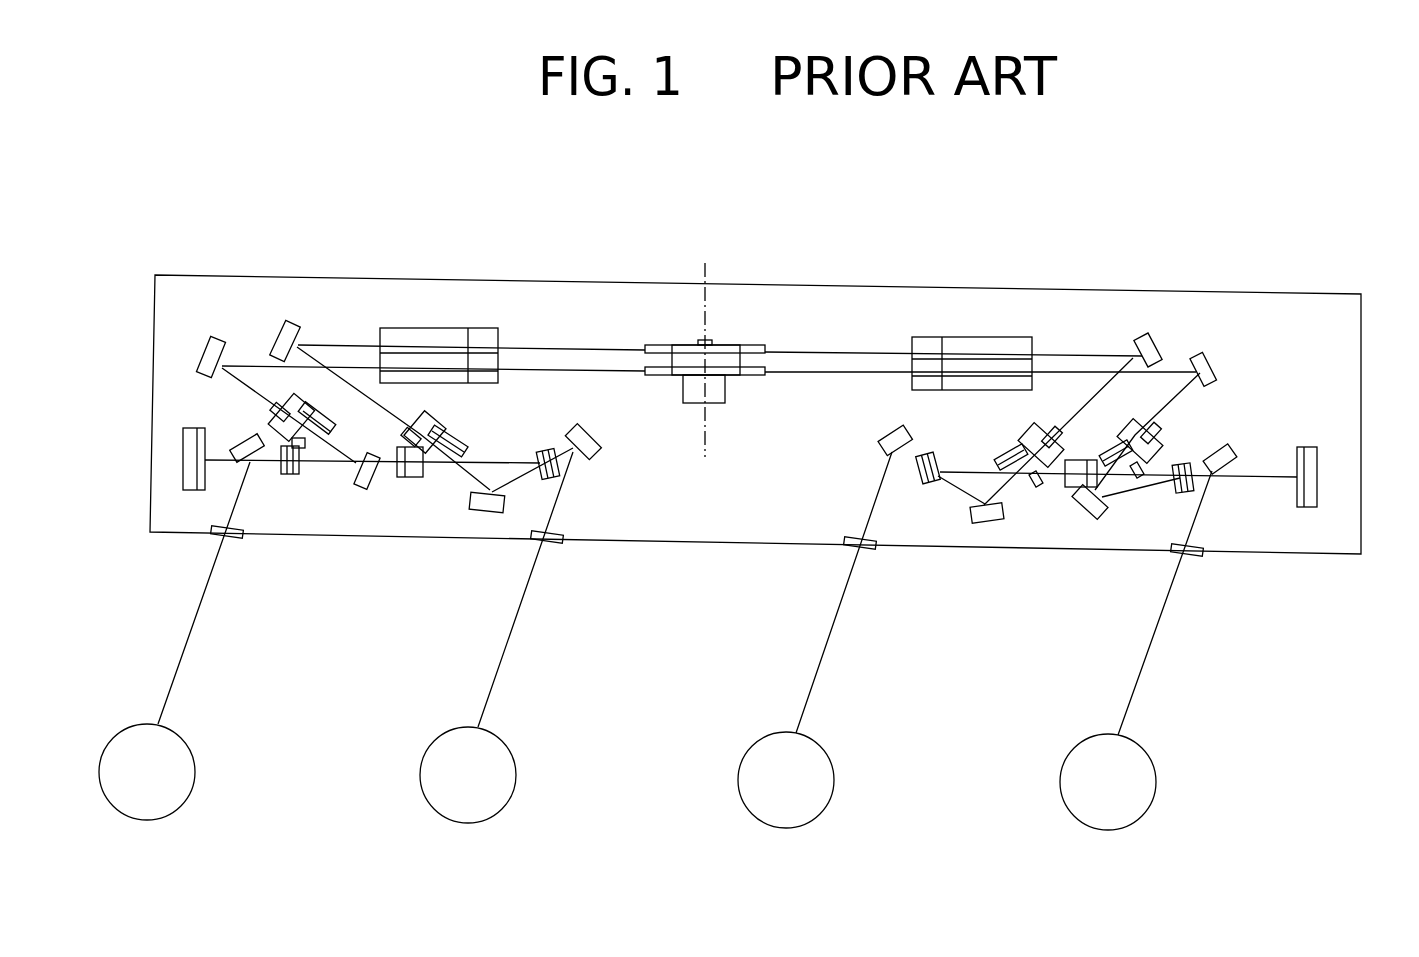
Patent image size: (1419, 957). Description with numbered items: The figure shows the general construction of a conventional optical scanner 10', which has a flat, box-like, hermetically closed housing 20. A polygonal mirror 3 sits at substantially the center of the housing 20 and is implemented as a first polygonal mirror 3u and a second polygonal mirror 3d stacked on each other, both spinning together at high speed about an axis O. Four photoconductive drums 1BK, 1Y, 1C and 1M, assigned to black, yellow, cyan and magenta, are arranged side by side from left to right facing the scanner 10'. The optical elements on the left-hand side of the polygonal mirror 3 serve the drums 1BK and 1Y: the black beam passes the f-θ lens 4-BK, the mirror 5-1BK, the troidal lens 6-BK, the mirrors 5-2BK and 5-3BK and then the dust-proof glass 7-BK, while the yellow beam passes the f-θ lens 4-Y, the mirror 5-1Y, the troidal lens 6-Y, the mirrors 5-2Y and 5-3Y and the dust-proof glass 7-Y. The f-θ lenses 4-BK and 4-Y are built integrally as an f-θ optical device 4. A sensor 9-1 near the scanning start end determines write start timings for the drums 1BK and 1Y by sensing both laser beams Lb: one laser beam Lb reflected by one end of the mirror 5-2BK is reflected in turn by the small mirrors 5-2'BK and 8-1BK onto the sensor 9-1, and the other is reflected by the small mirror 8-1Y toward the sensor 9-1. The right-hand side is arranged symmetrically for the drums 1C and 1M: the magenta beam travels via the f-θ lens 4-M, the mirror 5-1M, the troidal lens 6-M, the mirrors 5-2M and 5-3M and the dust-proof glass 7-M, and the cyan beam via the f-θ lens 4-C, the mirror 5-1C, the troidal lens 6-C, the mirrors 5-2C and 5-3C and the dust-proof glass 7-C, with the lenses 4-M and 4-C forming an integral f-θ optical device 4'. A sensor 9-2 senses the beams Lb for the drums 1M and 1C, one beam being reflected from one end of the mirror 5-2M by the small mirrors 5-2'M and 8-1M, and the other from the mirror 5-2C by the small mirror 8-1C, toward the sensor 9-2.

The optical scanner 10' is at (756, 424).
The housing 20 is at (1362, 330).
The axis O is at (706, 342).
The polygonal mirror 3 is at (740, 308).
The first polygonal mirror 3u is at (722, 347).
The second polygonal mirror 3d is at (750, 353).
The f-θ optical device 4 is at (444, 298).
The f-θ lens 4-Y is at (397, 333).
The f-θ lens 4-BK is at (423, 370).
The f-θ optical device 4' is at (1012, 306).
The f-θ lens 4-C is at (958, 343).
The f-θ lens 4-M is at (983, 380).
The mirror 5-1BK is at (209, 340).
The mirror 5-1Y is at (282, 329).
The mirror 5-1C is at (1150, 335).
The mirror 5-1M is at (1218, 362).
The troidal lens 6-BK is at (305, 398).
The troidal lens 6-Y is at (457, 417).
The troidal lens 6-C is at (1022, 433).
The troidal lens 6-M is at (1120, 428).
The mirror 5-2BK is at (360, 490).
The mirror 5-2Y is at (485, 513).
The mirror 5-2C is at (982, 527).
The mirror 5-2M is at (1087, 520).
The mirror 5-2'BK is at (290, 513).
The mirror 5-2'M is at (1148, 506).
The mirror 8-1BK is at (418, 478).
The mirror 8-1Y is at (542, 448).
The mirror 8-1C is at (927, 487).
The mirror 8-1M is at (1068, 488).
The mirror 5-3BK is at (237, 443).
The mirror 5-3Y is at (598, 452).
The mirror 5-3C is at (880, 435).
The mirror 5-3M is at (1232, 447).
The sensor 9-1 is at (182, 450).
The sensor 9-2 is at (1318, 461).
The laser beam Lb is at (186, 650).
The dust-proof glass 7-BK is at (213, 537).
The dust-proof glass 7-Y is at (557, 543).
The dust-proof glass 7-C is at (850, 550).
The dust-proof glass 7-M is at (1195, 560).
The photoconductive drum 1BK is at (175, 791).
The photoconductive drum 1Y is at (492, 794).
The photoconductive drum 1C is at (806, 800).
The photoconductive drum 1M is at (1132, 800).